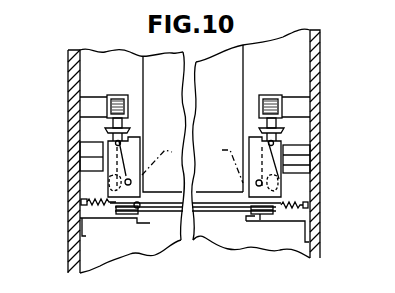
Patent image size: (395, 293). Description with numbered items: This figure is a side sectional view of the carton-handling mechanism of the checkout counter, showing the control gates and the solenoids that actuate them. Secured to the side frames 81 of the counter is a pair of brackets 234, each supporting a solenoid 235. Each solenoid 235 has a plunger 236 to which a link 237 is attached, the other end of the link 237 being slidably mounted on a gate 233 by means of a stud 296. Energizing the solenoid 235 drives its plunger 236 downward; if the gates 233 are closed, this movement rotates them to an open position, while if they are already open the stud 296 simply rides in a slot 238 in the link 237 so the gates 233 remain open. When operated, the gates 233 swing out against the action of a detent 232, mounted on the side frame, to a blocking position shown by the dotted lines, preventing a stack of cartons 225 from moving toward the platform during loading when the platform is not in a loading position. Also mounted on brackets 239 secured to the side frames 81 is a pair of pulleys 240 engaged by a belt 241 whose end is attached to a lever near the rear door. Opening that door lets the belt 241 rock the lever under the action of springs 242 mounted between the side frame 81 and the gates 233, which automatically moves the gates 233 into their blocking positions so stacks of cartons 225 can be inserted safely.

The side frame 81 is at (70, 66).
The stack of cartons 225 is at (245, 63).
The detent 232 is at (110, 170).
The gate 233 is at (141, 143).
The bracket 234 is at (88, 105).
The solenoid 235 is at (123, 73).
The plunger 236 is at (110, 134).
The link 237 is at (284, 154).
The slot 238 is at (108, 181).
The bracket 239 is at (97, 221).
The pulley 240 is at (137, 219).
The belt 241 is at (197, 167).
The spring 242 is at (92, 205).
The stud 296 is at (100, 194).